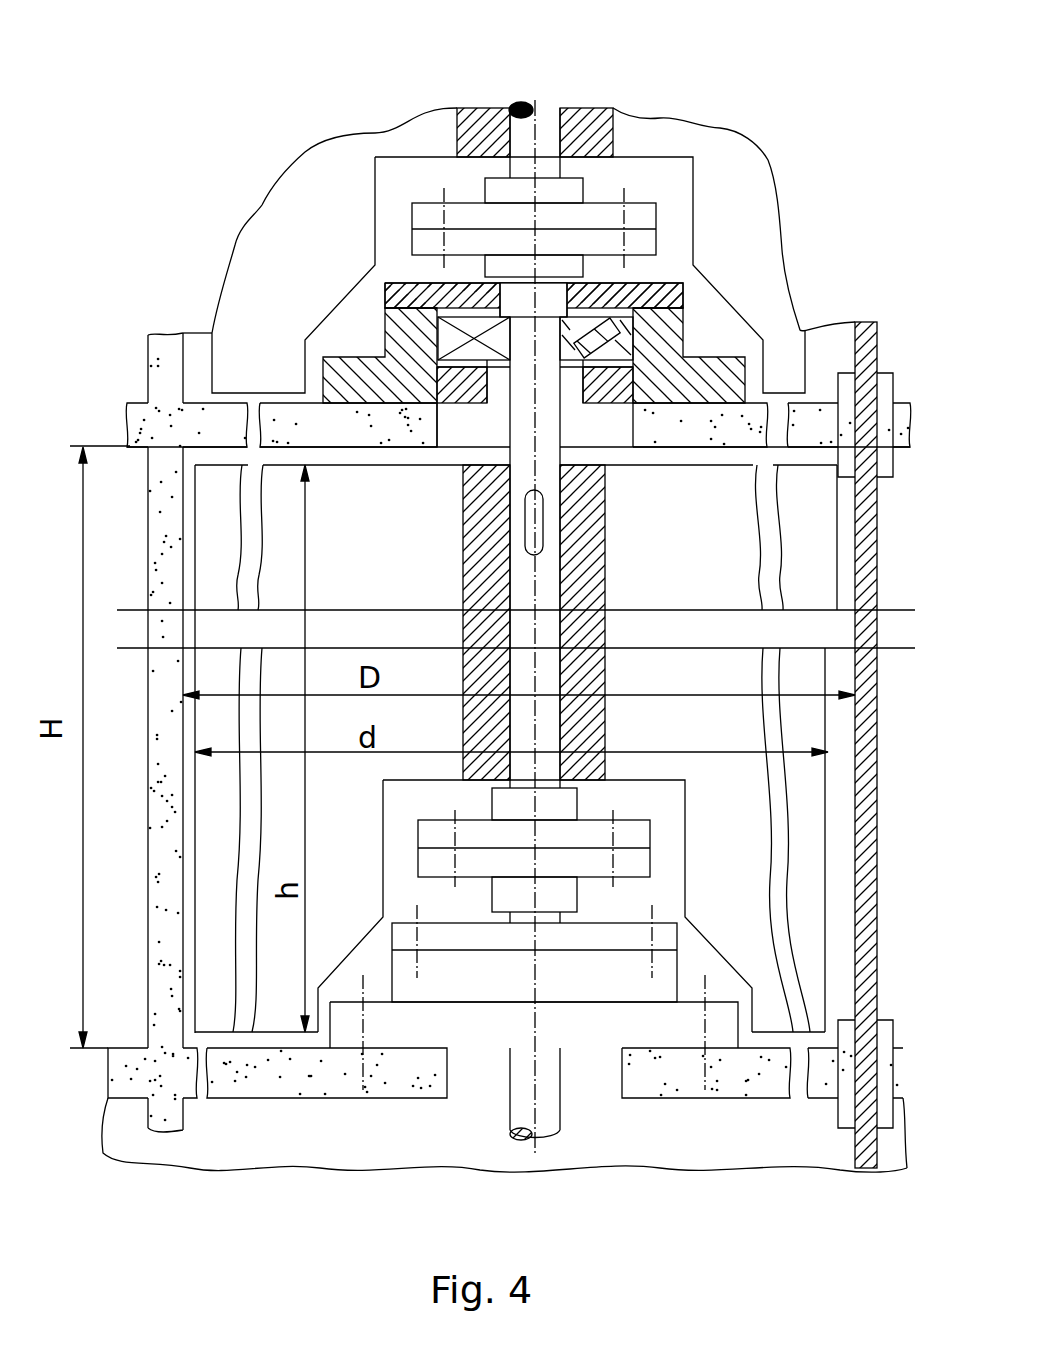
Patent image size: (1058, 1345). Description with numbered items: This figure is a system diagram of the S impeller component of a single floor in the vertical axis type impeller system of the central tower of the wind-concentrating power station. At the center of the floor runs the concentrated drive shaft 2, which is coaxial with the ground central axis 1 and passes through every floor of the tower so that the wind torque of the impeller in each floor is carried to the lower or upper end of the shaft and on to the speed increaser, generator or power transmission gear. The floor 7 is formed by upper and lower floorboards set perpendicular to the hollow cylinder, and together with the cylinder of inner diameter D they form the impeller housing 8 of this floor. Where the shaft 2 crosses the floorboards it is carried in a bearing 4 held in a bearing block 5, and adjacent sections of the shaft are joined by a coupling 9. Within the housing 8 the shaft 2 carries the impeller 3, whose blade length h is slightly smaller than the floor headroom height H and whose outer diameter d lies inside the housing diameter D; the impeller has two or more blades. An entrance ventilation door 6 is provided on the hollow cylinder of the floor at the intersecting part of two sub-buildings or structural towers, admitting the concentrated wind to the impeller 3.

The central axis 1 is at (533, 105).
The concentrated drive shaft 2 is at (548, 112).
The impeller 3 is at (630, 130).
The bearing 4 is at (633, 308).
The bearing block 5 is at (665, 342).
The entrance ventilation door 6 is at (873, 322).
The floor 7 is at (240, 1078).
The impeller housing 8 is at (167, 442).
The coupling 9 is at (603, 212).